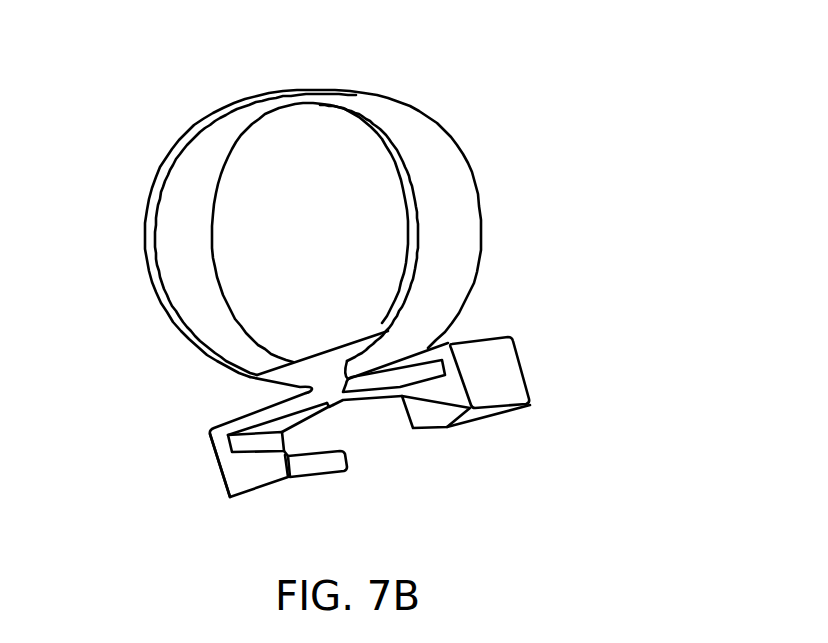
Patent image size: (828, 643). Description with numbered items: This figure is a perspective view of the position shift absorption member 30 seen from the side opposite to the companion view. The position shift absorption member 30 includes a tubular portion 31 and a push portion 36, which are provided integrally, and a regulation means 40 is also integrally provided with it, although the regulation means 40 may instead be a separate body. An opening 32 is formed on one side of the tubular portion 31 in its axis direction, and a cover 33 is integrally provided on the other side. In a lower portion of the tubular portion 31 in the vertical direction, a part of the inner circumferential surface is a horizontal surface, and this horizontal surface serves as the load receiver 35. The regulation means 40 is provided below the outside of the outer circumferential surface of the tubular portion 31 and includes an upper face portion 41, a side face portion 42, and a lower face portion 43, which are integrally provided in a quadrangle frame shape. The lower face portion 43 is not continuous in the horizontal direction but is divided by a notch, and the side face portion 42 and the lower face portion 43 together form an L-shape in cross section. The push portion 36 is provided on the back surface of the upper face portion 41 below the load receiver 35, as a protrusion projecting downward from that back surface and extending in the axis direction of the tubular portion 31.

The position shift absorption member 30 is at (525, 110).
The tubular portion 31 is at (400, 130).
The opening 32 is at (192, 197).
The cover 33 is at (283, 167).
The load receiver 35 is at (322, 352).
The push portion 36 is at (338, 400).
The regulation means 40 is at (536, 378).
The upper face portion 41 is at (252, 417).
The side face portion 42 is at (453, 363).
The lower face portion 43 is at (437, 412).